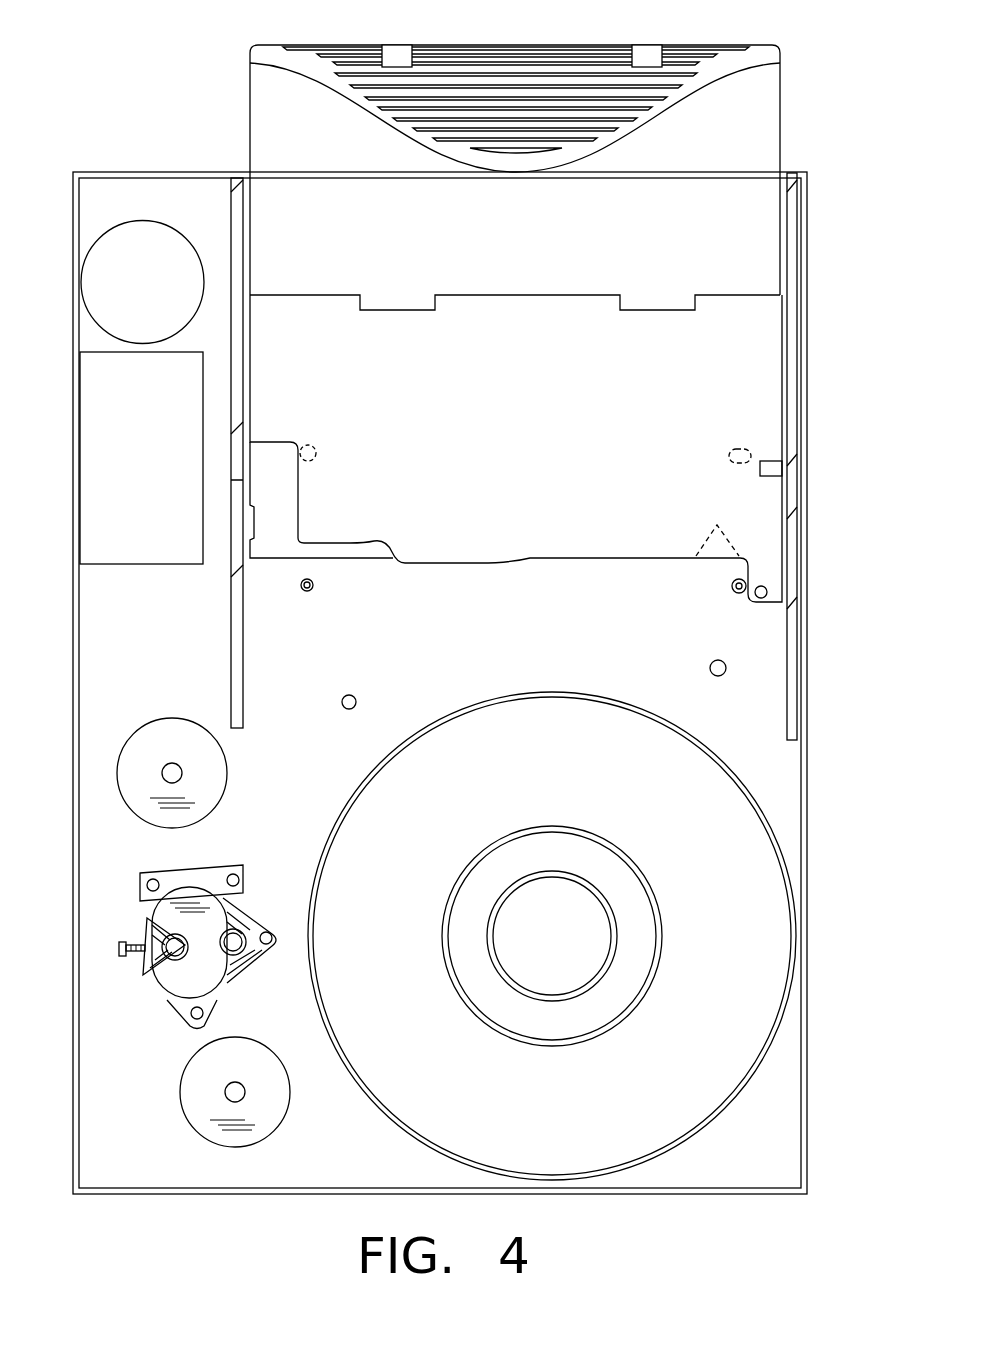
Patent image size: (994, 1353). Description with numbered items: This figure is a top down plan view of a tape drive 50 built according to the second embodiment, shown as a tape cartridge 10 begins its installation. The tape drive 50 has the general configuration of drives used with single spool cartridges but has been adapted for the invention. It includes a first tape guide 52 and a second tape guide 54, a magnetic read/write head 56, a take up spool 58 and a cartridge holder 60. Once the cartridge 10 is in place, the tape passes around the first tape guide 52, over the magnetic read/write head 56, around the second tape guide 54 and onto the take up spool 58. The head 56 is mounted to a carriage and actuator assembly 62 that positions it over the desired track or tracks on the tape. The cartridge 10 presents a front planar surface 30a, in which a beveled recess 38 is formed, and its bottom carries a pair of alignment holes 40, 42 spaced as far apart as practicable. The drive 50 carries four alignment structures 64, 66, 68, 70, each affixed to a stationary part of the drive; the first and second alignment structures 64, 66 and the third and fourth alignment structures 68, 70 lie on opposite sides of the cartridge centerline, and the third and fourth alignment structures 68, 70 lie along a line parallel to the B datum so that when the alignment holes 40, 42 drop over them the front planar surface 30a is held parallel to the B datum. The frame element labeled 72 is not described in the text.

The tape cartridge 10 is at (786, 31).
The front planar surface 30a is at (350, 560).
The beveled recess 38 is at (716, 525).
The alignment hole 40 is at (730, 448).
The alignment hole 42 is at (318, 455).
The tape drive 50 is at (147, 123).
The first tape guide 52 is at (214, 771).
The second tape guide 54 is at (280, 1103).
The magnetic read/write head 56 is at (120, 953).
The take up spool 58 is at (360, 828).
The cartridge holder 60 is at (776, 350).
The carriage and actuator assembly 62 is at (258, 983).
The first alignment structure 64 is at (710, 669).
The second alignment structure 66 is at (356, 702).
The third alignment structure 68 is at (741, 597).
The fourth alignment structure 70 is at (309, 597).
The base plate 72 is at (76, 622).